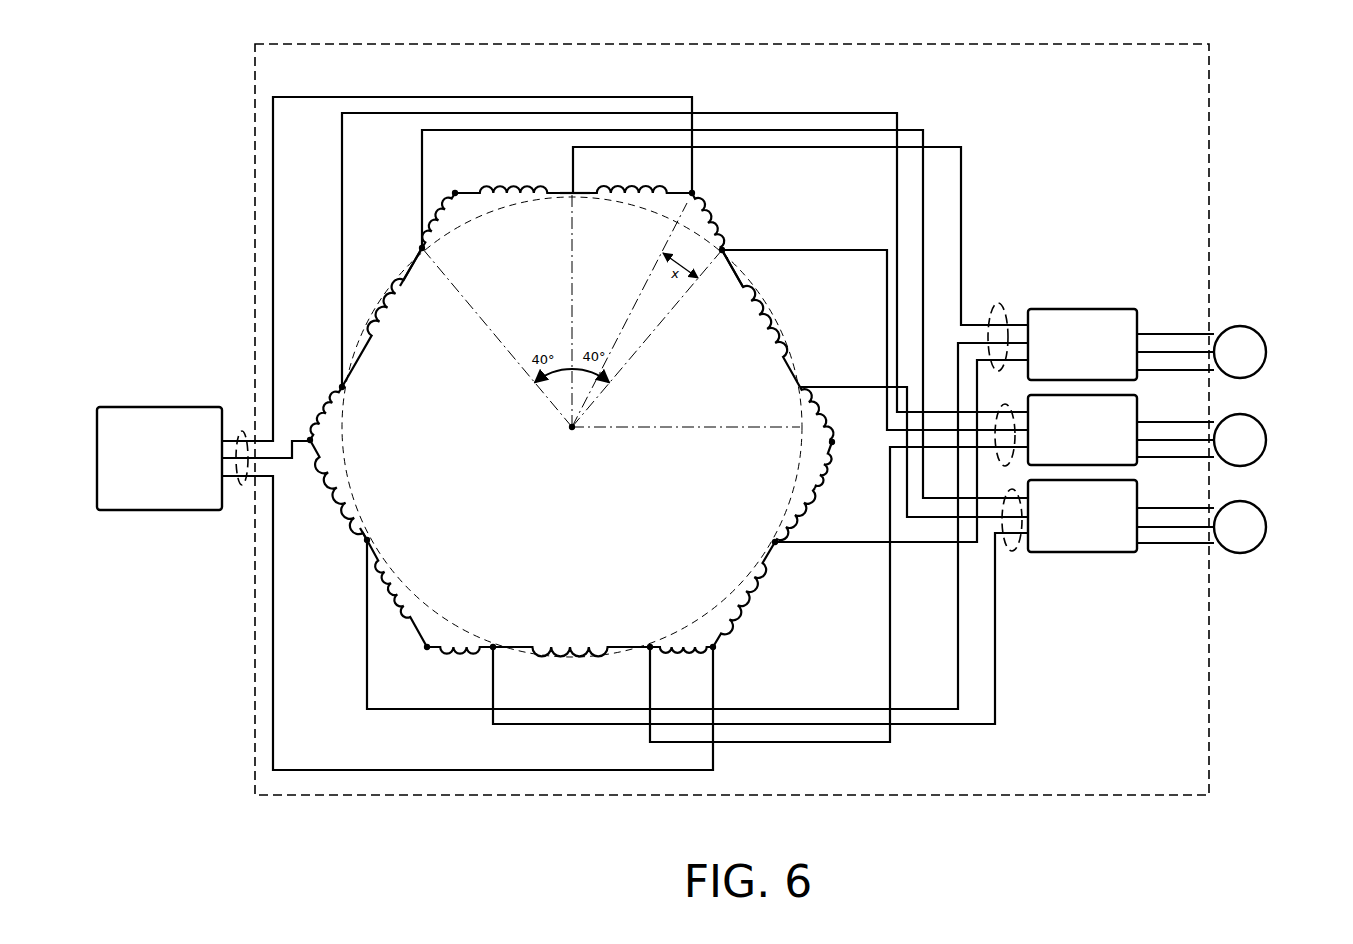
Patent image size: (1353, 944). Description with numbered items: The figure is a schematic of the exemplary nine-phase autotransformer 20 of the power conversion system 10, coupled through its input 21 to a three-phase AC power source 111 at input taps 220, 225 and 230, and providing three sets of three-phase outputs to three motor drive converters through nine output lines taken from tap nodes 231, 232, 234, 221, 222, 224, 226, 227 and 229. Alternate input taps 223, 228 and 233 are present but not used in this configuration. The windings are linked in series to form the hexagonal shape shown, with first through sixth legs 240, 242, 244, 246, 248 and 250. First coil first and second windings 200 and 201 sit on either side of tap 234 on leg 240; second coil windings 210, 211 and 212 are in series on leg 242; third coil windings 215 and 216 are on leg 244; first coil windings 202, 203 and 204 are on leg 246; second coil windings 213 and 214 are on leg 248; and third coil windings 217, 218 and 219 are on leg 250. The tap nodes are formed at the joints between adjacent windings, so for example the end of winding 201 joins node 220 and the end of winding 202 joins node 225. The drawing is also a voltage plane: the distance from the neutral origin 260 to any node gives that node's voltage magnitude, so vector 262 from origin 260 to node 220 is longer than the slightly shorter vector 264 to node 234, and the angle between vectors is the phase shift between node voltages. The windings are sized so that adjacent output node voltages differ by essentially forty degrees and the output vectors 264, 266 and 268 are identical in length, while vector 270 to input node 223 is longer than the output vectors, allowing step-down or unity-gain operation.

The power conversion system 10 is at (255, 72).
The autotransformer 20 is at (170, 104).
The input 21 is at (240, 485).
The AC power source 111 is at (165, 407).
The first coil first winding 200 is at (499, 187).
The first coil second winding 201 is at (626, 188).
The first coil third winding 202 is at (673, 657).
The first coil fourth winding 203 is at (580, 657).
The first coil fifth winding 204 is at (442, 653).
The second coil first winding 210 is at (708, 206).
The second coil second winding 211 is at (778, 328).
The second coil third winding 212 is at (808, 413).
The second coil fourth winding 213 is at (367, 593).
The second coil fifth winding 214 is at (325, 485).
The third coil first winding 215 is at (818, 489).
The third coil second winding 216 is at (750, 616).
The third coil third winding 217 is at (320, 413).
The third coil fourth winding 218 is at (382, 297).
The third coil fifth winding 219 is at (424, 211).
The input tap 220 is at (695, 190).
The output tap node 221 is at (725, 246).
The output tap node 222 is at (797, 387).
The alternate input tap 223 is at (833, 441).
The output tap node 224 is at (772, 542).
The input tap 225 is at (718, 647).
The output tap node 226 is at (652, 642).
The output tap node 227 is at (493, 643).
The alternate input tap 228 is at (430, 640).
The output tap node 229 is at (372, 540).
The input tap 230 is at (313, 440).
The output tap node 231 is at (345, 389).
The output tap node 232 is at (425, 249).
The alternate input tap 233 is at (455, 190).
The output tap node 234 is at (565, 197).
The first leg 240 is at (584, 198).
The second leg 242 is at (736, 272).
The third leg 244 is at (776, 529).
The fourth leg 246 is at (630, 643).
The fifth leg 248 is at (364, 526).
The sixth leg 250 is at (410, 266).
The origin 260 is at (569, 429).
The voltage magnitude vector 262 is at (631, 310).
The voltage magnitude vector 264 is at (570, 314).
The voltage magnitude vector 266 is at (478, 320).
The voltage magnitude vector 268 is at (659, 323).
The voltage magnitude vector 270 is at (690, 430).